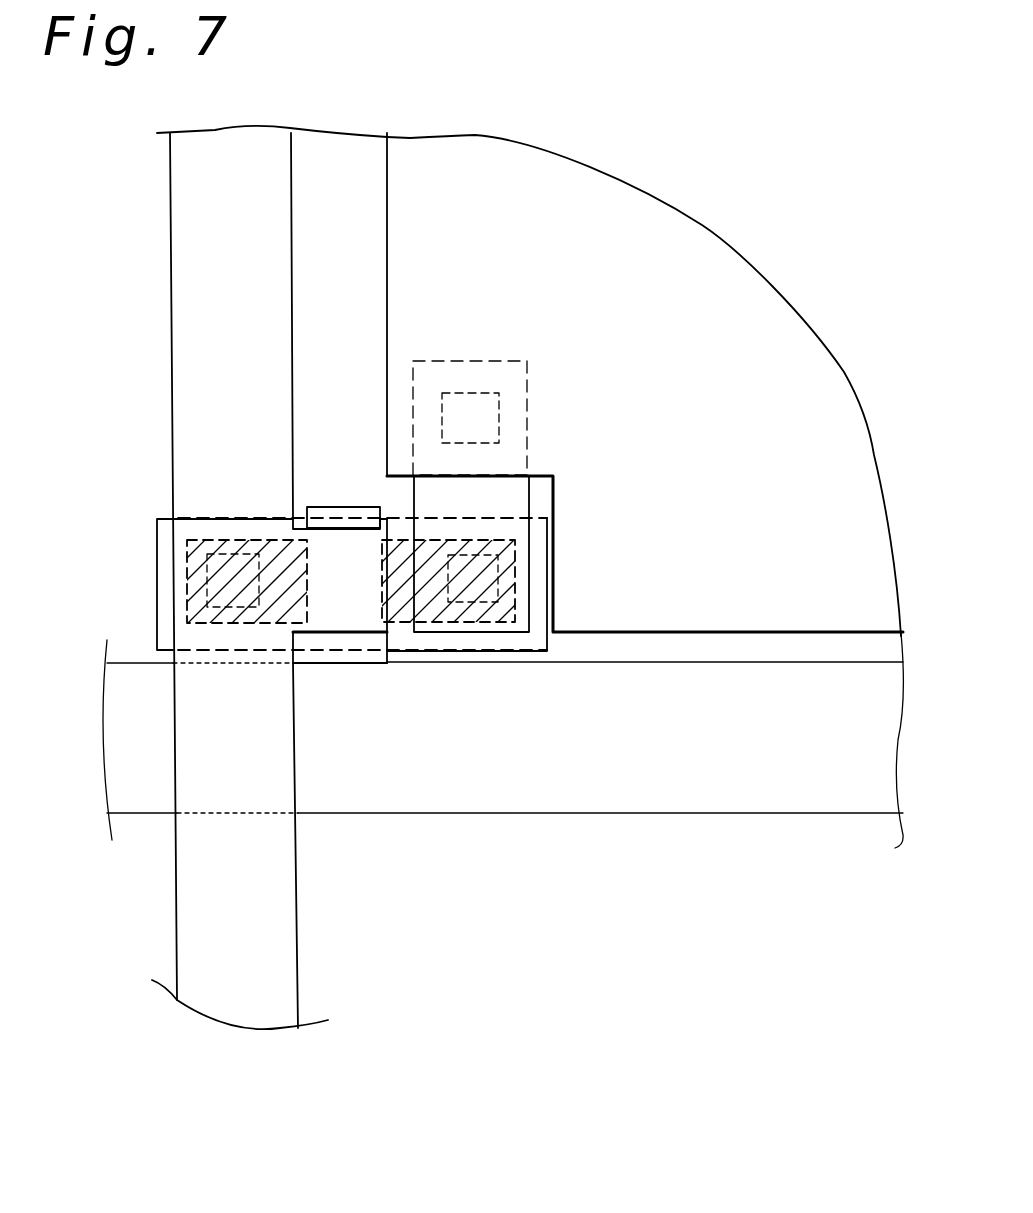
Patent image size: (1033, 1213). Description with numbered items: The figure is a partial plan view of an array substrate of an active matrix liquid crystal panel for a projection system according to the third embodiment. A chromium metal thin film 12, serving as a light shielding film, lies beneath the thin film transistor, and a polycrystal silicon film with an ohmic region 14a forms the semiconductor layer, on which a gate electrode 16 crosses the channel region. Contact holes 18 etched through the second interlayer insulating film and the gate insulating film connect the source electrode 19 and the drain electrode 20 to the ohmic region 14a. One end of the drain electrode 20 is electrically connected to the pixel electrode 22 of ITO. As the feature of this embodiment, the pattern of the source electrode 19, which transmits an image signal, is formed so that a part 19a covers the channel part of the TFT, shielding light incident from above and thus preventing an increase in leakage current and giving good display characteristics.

The metal thin film 12 is at (553, 543).
The ohmic region 14a is at (287, 506).
The gate electrode 16 is at (343, 507).
The contact hole 18 is at (227, 632).
The source electrode 19 is at (298, 912).
The part 19a is at (400, 672).
The drain electrode 20 is at (478, 361).
The pixel electrode 22 is at (712, 250).